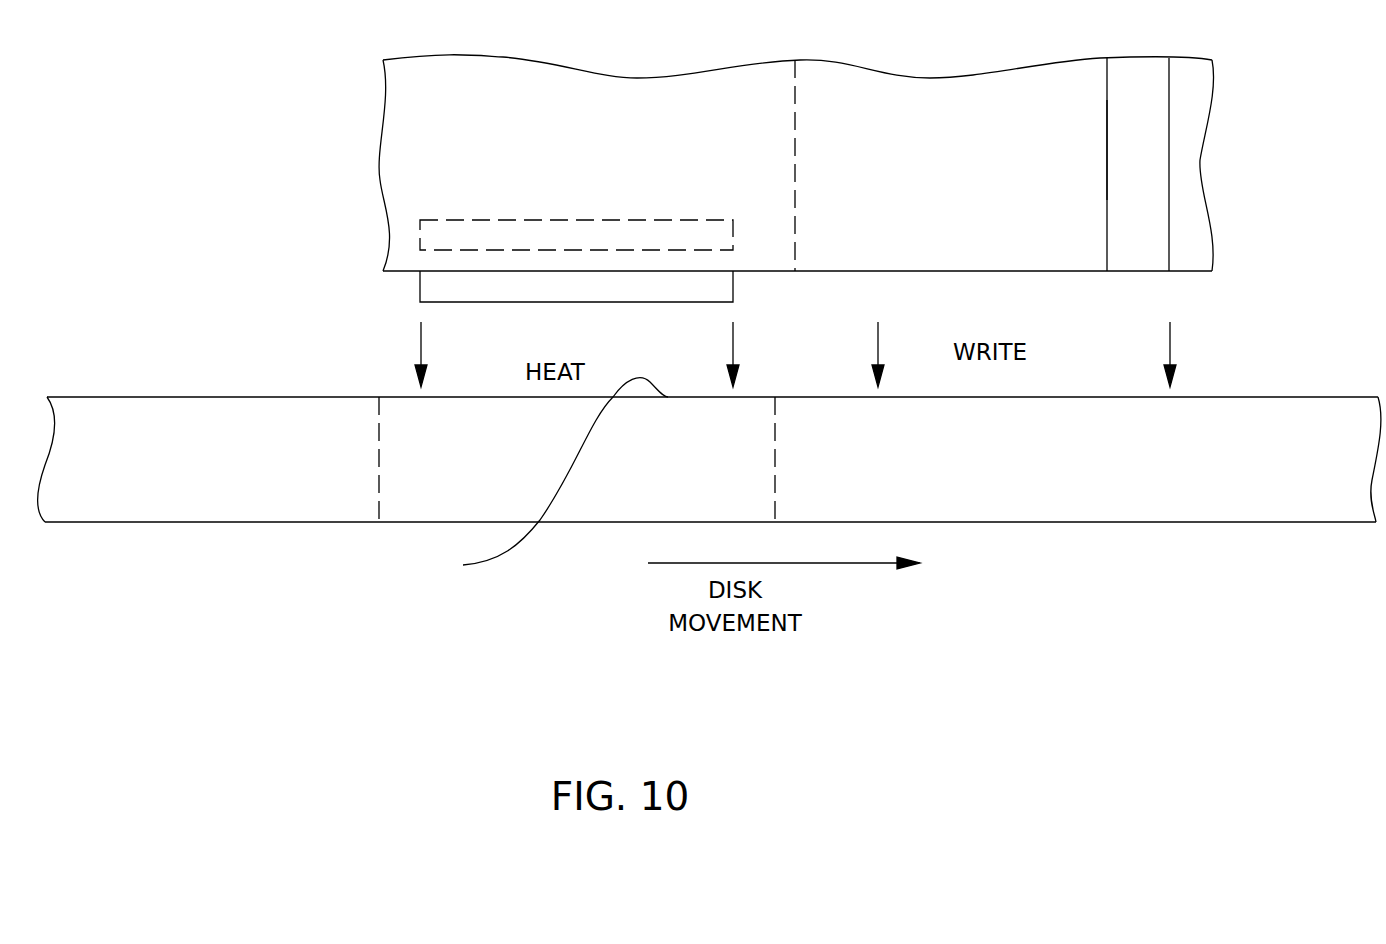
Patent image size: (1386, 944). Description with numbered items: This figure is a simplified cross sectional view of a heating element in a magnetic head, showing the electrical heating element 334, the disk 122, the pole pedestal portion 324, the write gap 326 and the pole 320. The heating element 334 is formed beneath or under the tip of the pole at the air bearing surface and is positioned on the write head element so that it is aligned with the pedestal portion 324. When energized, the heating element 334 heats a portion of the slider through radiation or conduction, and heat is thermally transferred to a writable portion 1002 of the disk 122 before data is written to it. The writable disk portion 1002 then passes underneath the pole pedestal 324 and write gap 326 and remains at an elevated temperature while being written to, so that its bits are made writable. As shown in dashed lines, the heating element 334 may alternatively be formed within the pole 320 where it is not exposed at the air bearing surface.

The disk 122 is at (205, 397).
The pole 320 is at (1200, 102).
The pole pedestal portion 324 is at (1031, 177).
The write gap 326 is at (1148, 93).
The heating element 334 is at (555, 220).
The writable portion 1002 is at (531, 478).